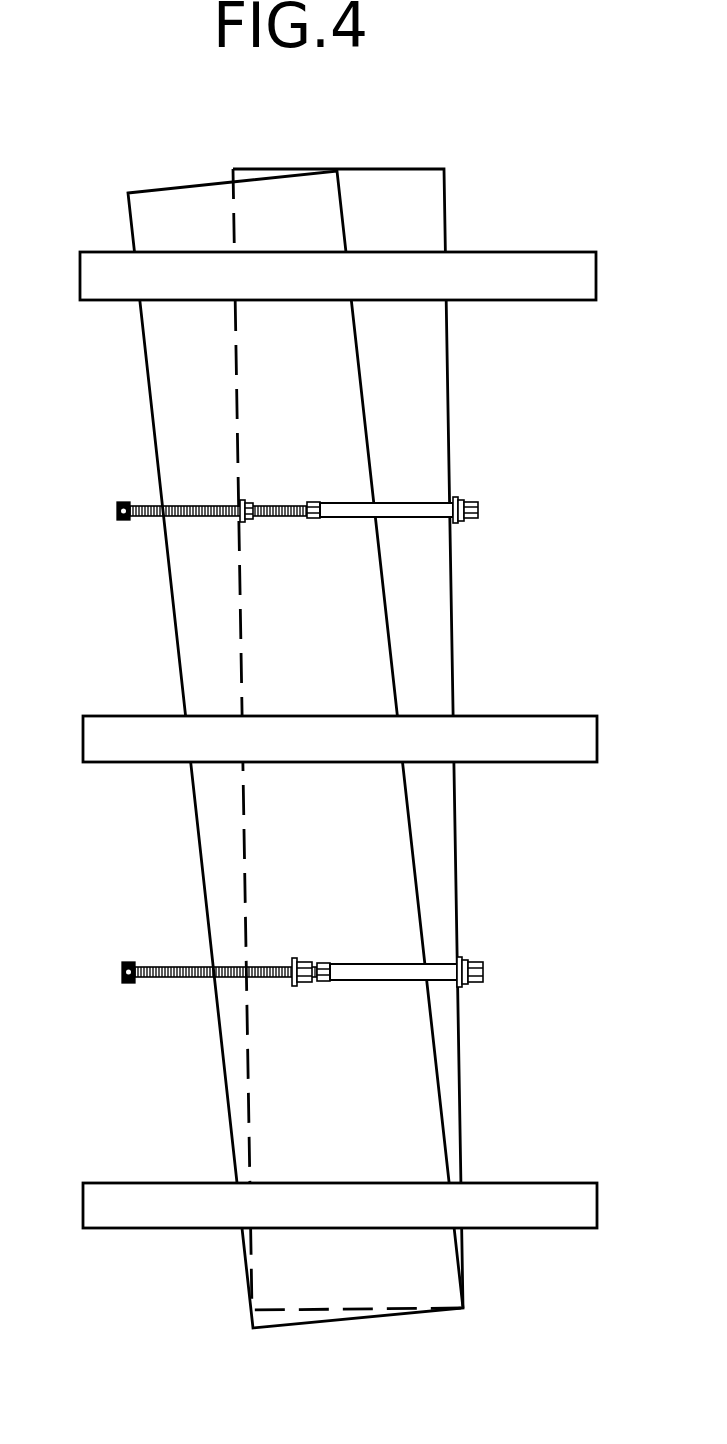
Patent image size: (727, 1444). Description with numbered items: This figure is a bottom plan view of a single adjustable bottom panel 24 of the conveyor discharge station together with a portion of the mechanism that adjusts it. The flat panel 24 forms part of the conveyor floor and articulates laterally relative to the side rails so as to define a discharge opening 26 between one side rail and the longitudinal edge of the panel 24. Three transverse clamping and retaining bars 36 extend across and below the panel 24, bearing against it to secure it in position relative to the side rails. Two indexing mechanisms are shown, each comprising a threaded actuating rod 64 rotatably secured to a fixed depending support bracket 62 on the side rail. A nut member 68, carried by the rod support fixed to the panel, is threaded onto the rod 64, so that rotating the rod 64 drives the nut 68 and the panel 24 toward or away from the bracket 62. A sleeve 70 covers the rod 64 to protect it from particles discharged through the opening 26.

The movable panel 24 is at (150, 373).
The discharge opening 26 is at (407, 388).
The clamping and retaining bar 36 is at (500, 252).
The support bracket 62 is at (460, 498).
The actuating rod 64 is at (192, 503).
The nut member 68 is at (245, 500).
The sleeve 70 is at (340, 503).